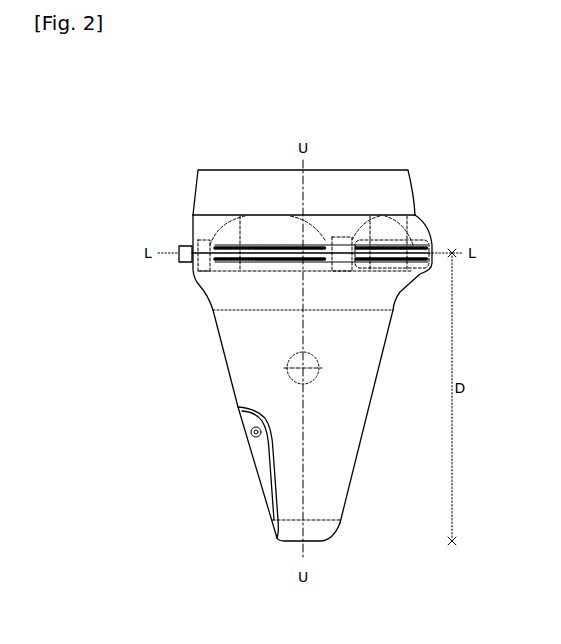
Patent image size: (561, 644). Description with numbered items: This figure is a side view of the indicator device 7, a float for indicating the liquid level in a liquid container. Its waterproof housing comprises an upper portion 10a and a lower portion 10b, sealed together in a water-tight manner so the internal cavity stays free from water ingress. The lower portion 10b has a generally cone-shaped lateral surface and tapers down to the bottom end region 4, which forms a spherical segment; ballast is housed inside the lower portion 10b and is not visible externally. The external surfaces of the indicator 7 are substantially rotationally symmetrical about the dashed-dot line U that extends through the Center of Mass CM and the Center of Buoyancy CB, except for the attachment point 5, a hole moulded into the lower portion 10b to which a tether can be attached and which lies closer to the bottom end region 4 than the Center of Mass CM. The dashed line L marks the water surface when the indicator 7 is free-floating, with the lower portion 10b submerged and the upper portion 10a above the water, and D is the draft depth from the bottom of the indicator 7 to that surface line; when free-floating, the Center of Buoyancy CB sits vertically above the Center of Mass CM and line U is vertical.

The indicator device 7 is at (197, 169).
The upper portion 10a is at (413, 178).
The lower portion 10b is at (228, 382).
The bottom end region 4 is at (332, 539).
The attachment point 5 is at (248, 437).
The Center of Buoyancy CB is at (245, 270).
The Center of Mass CM is at (305, 370).